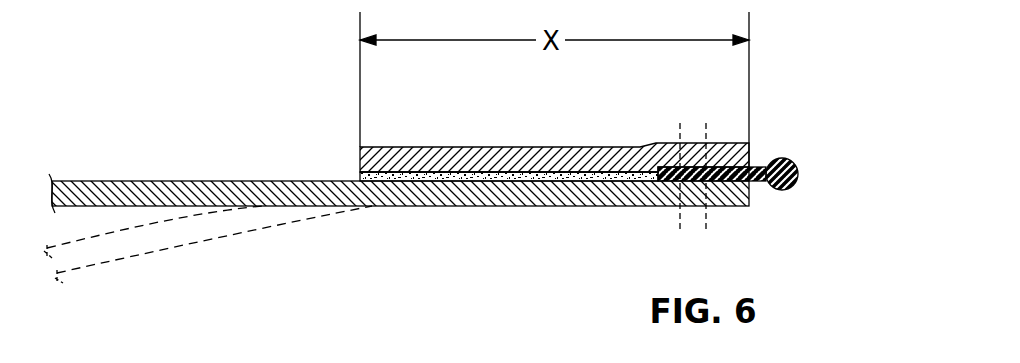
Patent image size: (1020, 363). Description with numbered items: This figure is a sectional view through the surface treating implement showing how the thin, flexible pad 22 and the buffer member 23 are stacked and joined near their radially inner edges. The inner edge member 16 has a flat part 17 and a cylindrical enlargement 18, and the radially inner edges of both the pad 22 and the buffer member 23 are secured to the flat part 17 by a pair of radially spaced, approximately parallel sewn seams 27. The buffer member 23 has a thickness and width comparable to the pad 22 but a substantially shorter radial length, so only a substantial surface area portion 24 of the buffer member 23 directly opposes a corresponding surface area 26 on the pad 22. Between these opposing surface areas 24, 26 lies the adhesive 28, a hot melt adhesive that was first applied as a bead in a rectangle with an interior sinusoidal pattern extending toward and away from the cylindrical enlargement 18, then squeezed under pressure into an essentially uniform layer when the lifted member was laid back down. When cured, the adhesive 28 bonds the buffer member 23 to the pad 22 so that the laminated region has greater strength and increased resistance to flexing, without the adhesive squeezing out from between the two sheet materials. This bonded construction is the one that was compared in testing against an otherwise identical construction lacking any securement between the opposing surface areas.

The inner edge member 16 is at (726, 176).
The flat part 17 is at (749, 143).
The cylindrical enlargement 18 is at (790, 190).
The pad 22 is at (417, 199).
The buffer member 23 is at (518, 158).
The surface area portion 24 is at (628, 182).
The surface area 26 is at (462, 172).
The sewn seams 27 is at (680, 123).
The adhesive bead 28 is at (542, 172).